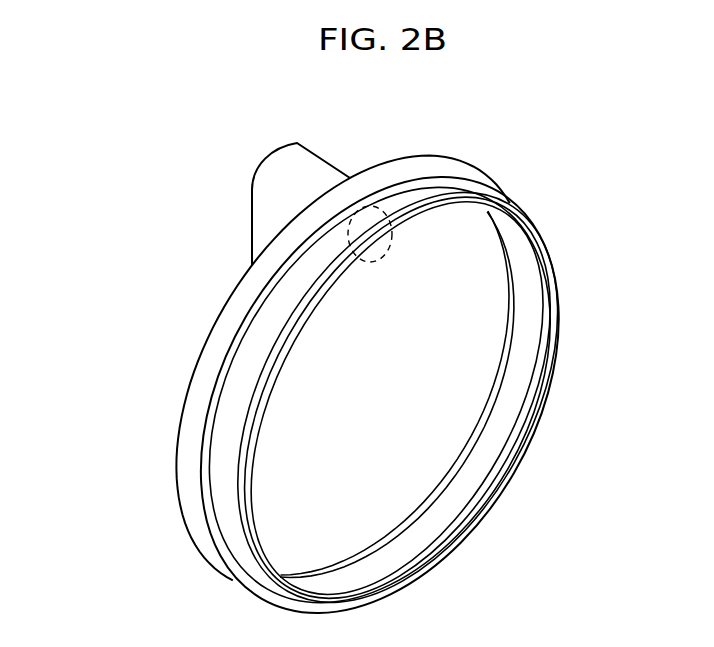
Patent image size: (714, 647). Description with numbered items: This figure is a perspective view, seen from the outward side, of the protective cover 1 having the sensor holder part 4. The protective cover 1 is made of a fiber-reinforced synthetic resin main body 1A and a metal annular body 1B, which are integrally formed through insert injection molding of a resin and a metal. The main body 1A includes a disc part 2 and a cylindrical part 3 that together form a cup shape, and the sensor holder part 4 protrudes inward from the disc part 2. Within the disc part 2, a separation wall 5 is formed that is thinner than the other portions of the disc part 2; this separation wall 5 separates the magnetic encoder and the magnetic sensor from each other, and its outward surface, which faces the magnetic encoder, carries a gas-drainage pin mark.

The protective cover 1 is at (343, 358).
The main body 1A is at (337, 380).
The annular body 1B is at (483, 460).
The disc part 2 is at (390, 367).
The cylindrical part 3 is at (203, 395).
The sensor holder part 4 is at (253, 228).
The separation wall 5 is at (374, 206).